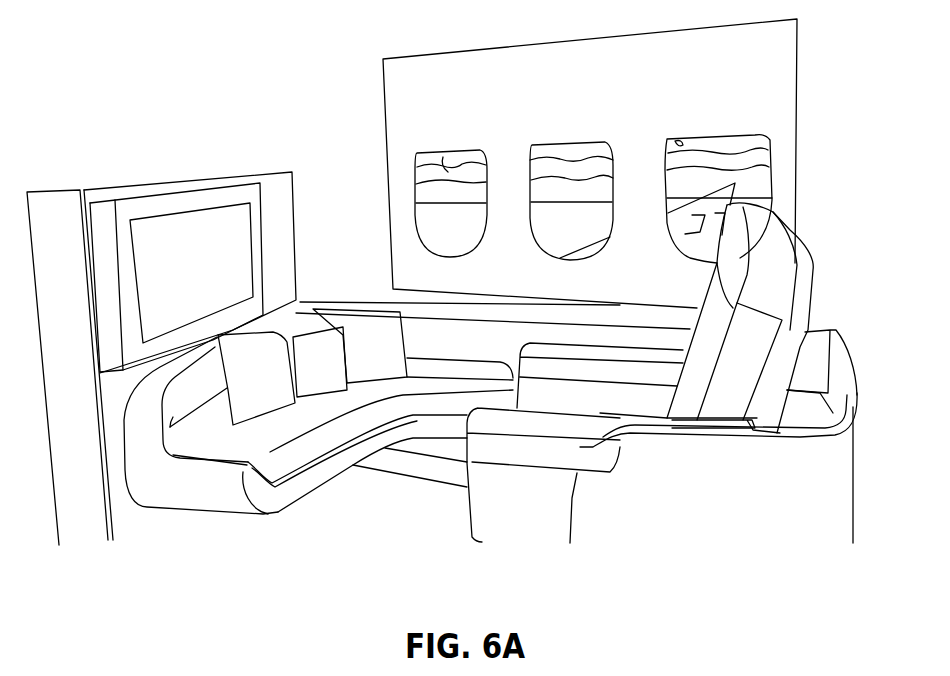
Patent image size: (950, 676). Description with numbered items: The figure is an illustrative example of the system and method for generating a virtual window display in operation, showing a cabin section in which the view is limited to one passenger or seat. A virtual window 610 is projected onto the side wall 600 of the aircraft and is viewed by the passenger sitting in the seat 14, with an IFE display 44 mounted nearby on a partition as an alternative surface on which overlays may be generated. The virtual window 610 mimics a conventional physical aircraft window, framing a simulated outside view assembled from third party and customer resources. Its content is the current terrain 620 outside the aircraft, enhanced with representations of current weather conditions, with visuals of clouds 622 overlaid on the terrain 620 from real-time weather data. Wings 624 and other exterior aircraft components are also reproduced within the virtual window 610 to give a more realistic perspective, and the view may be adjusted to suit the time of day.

The seat 14 is at (790, 290).
The IFE display 44 is at (168, 238).
The side wall 600 is at (840, 141).
The virtual window 610 is at (800, 69).
The current terrain 620 is at (445, 231).
The clouds 622 is at (428, 176).
The wings 624 is at (733, 190).